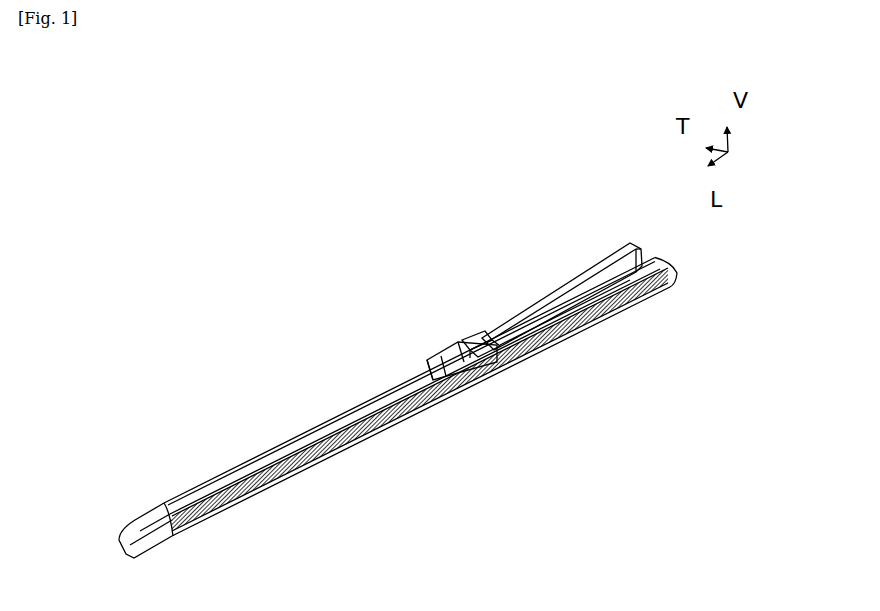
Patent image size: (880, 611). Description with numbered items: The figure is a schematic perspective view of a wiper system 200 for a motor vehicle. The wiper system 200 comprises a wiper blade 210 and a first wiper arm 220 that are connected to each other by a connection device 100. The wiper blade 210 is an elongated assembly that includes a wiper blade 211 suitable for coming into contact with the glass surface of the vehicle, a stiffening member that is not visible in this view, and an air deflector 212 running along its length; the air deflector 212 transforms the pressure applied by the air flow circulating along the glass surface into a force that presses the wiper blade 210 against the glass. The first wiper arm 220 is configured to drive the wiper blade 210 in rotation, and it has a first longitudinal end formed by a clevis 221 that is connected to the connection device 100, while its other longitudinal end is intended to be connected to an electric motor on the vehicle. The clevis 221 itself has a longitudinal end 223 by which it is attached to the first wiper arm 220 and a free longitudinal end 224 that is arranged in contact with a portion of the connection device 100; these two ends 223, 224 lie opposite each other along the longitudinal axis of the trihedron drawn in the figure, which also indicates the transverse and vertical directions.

The connection device 100 is at (432, 358).
The wiper system 200 is at (398, 424).
The wiper blade 210 is at (213, 523).
The wiper blade 211 is at (338, 456).
The air deflector 212 is at (292, 441).
The first wiper arm 220 is at (548, 296).
The clevis 221 is at (466, 342).
The longitudinal end 223 is at (528, 354).
The free longitudinal end 224 is at (497, 352).